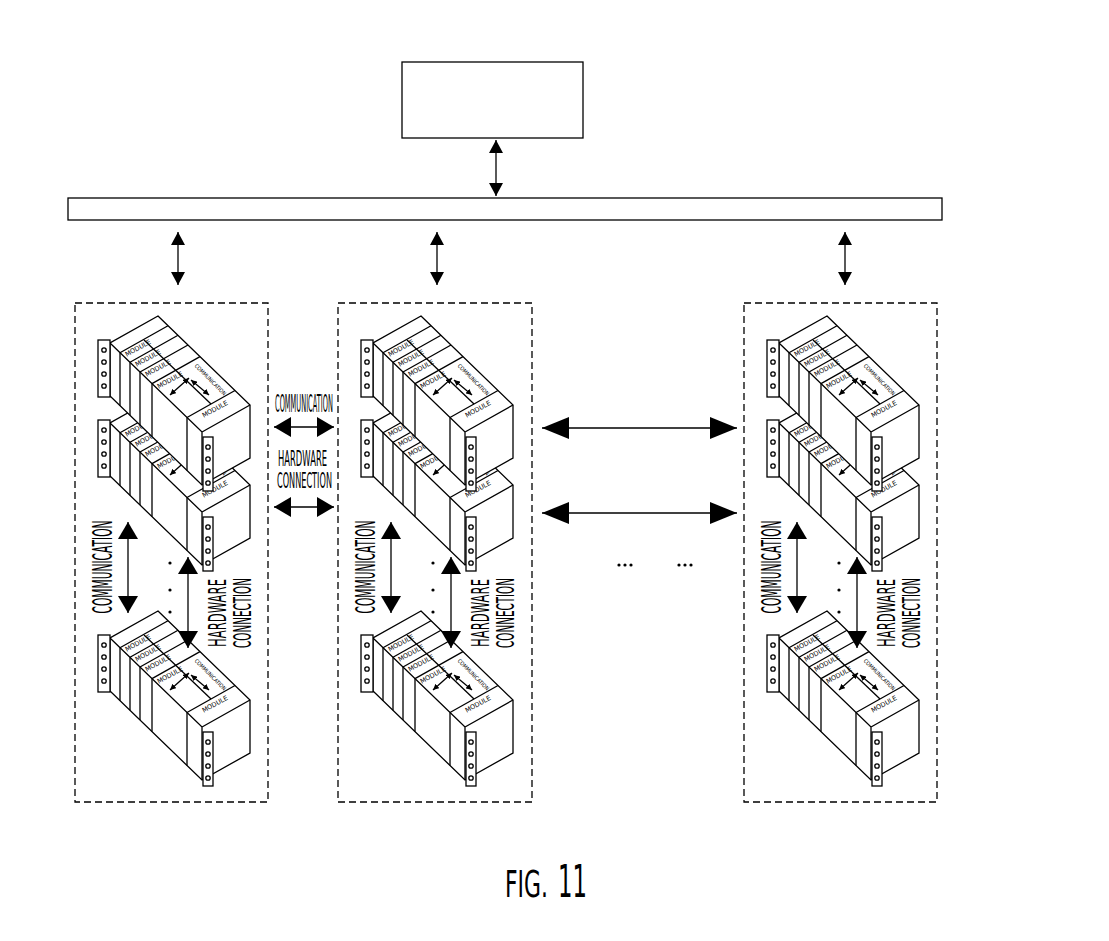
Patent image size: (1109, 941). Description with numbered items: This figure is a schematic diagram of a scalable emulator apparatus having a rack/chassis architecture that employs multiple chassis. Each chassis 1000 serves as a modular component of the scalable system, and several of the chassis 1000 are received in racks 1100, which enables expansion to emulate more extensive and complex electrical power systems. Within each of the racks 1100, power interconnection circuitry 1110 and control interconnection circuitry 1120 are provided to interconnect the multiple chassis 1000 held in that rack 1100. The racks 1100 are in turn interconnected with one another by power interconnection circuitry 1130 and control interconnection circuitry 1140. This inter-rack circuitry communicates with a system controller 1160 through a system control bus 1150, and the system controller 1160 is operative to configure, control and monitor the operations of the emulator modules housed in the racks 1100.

The system controller 1160 is at (583, 77).
The system control bus 1150 is at (815, 200).
The rack 1100 is at (229, 303).
The chassis 1000 is at (223, 378).
The control interconnection circuitry 1120 is at (383, 612).
The power interconnection circuitry 1110 is at (452, 588).
The control interconnection circuitry 1140 is at (607, 430).
The power interconnection circuitry 1130 is at (605, 515).